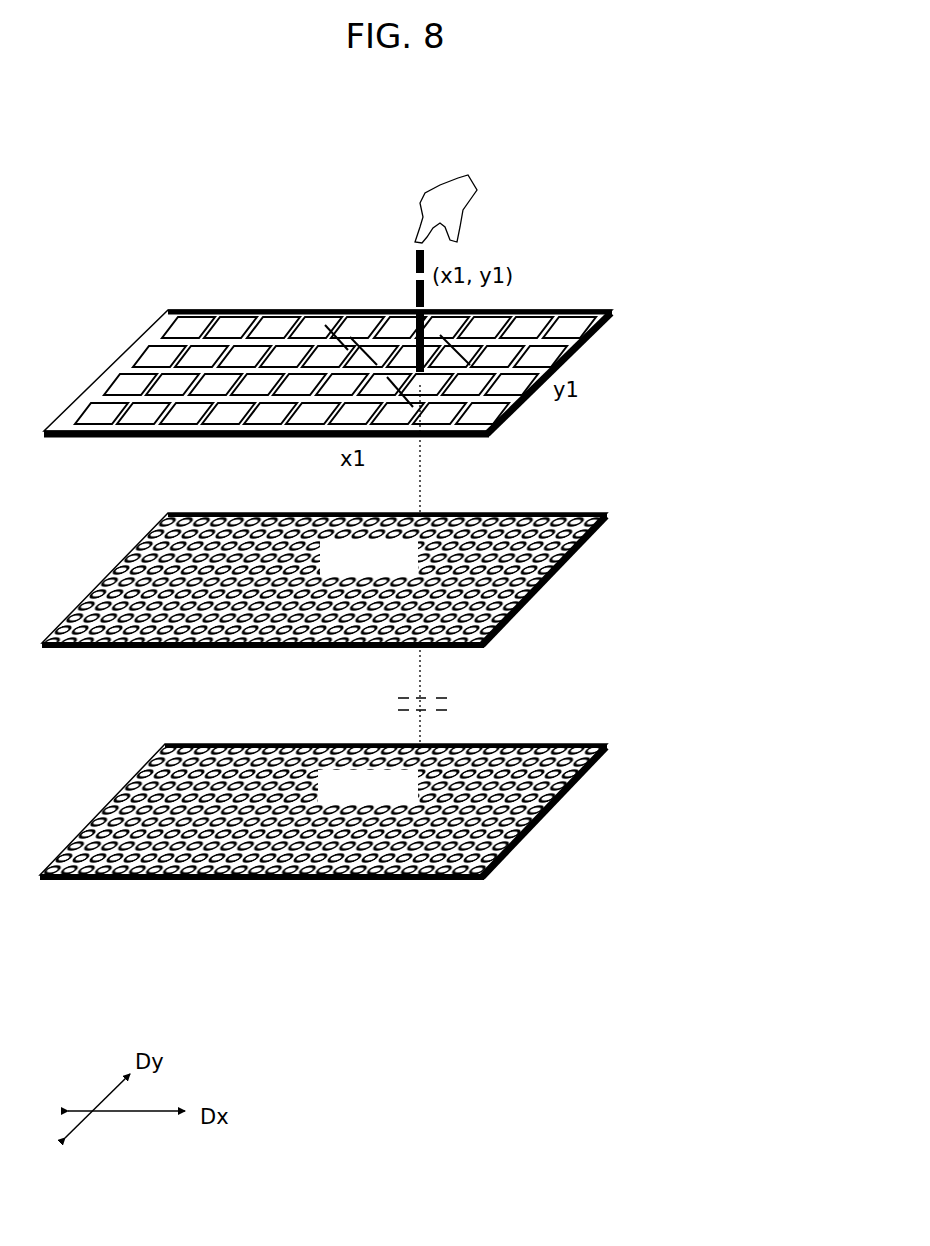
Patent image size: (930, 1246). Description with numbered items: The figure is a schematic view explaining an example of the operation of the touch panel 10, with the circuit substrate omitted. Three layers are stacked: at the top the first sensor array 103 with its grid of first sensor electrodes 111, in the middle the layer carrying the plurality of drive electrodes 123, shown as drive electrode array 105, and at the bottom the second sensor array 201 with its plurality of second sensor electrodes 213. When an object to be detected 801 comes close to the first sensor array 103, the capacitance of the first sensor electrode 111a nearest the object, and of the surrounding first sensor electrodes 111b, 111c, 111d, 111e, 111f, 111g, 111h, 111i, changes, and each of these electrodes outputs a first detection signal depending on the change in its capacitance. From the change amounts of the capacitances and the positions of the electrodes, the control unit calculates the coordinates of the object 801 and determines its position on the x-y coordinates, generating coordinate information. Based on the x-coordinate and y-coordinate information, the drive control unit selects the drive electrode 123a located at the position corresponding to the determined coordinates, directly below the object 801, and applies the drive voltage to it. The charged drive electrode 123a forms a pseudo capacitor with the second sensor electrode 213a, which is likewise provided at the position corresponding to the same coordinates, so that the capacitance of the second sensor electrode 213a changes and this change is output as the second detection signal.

The touch panel 10 is at (606, 96).
The object to be detected 801 is at (465, 178).
The first sensor array 103 is at (614, 247).
The first sensor electrode 111 is at (497, 309).
The first sensor electrode 111a is at (450, 425).
The first sensor electrode 111b is at (528, 309).
The first sensor electrode 111c is at (590, 335).
The first sensor electrode 111d is at (524, 400).
The first sensor electrode 111e is at (489, 435).
The first sensor electrode 111f is at (392, 427).
The first sensor electrode 111g is at (345, 430).
The first sensor electrode 111h is at (332, 335).
The first sensor electrode 111i is at (385, 335).
The drive electrode array 105 is at (616, 475).
The drive electrode 123 is at (536, 513).
The drive electrode 123a is at (485, 640).
The second sensor array 201 is at (618, 693).
The second sensor electrode 213 is at (498, 745).
The second sensor electrode 213a is at (490, 868).